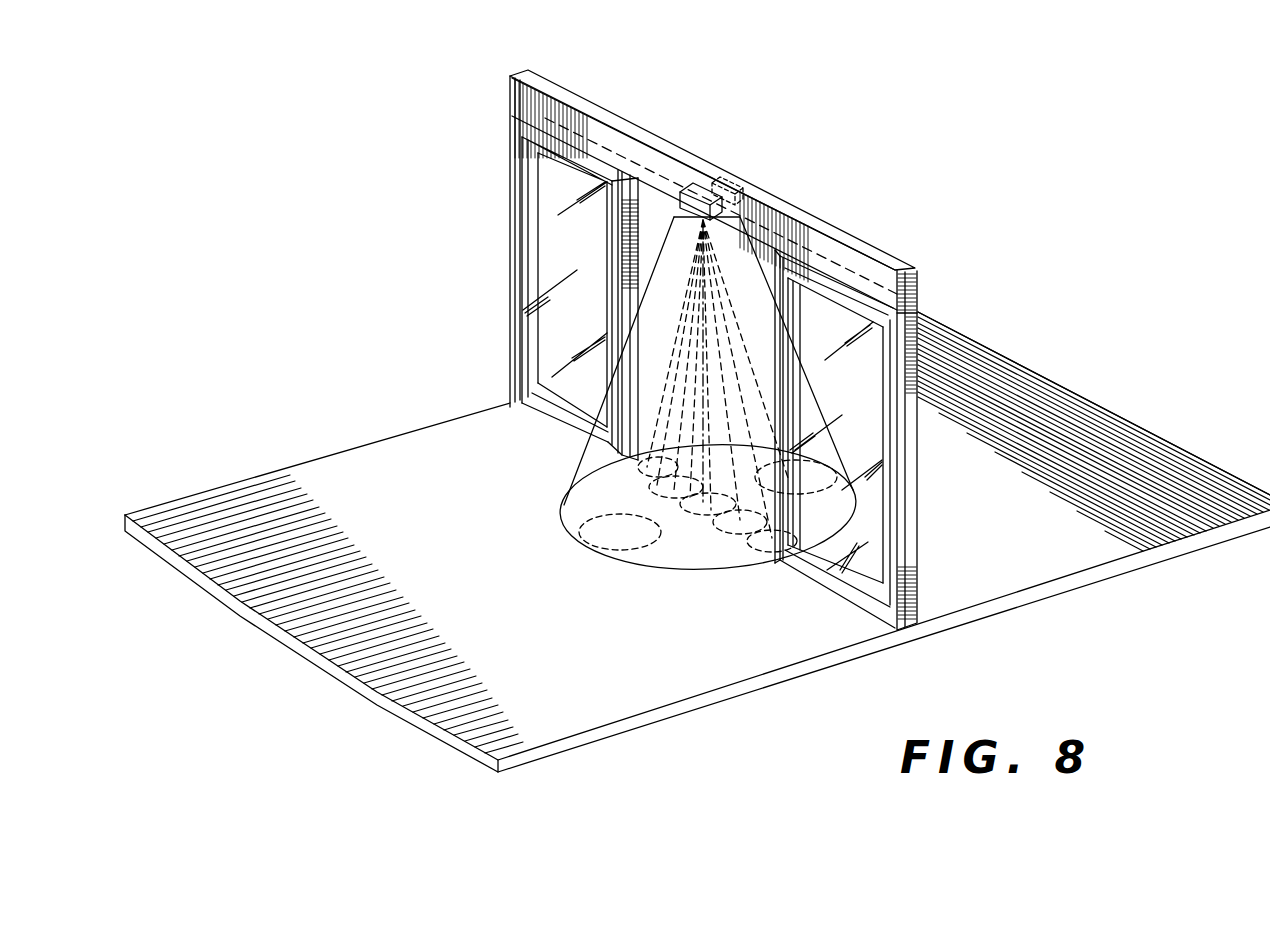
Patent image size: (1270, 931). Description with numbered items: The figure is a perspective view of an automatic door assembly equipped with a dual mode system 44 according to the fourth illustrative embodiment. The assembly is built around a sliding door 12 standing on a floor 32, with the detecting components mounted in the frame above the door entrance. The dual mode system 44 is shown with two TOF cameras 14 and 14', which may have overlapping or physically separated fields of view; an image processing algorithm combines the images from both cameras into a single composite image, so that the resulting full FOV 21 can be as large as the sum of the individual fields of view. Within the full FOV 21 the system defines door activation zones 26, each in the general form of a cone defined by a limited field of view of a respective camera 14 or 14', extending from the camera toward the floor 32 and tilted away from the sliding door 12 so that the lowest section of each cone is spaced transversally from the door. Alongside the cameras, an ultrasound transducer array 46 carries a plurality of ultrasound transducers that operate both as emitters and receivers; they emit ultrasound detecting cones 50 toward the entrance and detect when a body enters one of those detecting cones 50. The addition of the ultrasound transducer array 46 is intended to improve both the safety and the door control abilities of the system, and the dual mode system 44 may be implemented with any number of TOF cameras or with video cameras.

The sliding door 12 is at (883, 250).
The TOF camera 14 is at (701, 151).
The TOF camera 14' is at (746, 156).
The ultrasound transducer array 46 is at (736, 200).
The full FOV 21 is at (572, 466).
The door activation zone 26 is at (618, 537).
The ultrasound detecting cone 50 is at (668, 498).
The floor 32 is at (318, 591).
The dual mode system 44 is at (277, 241).